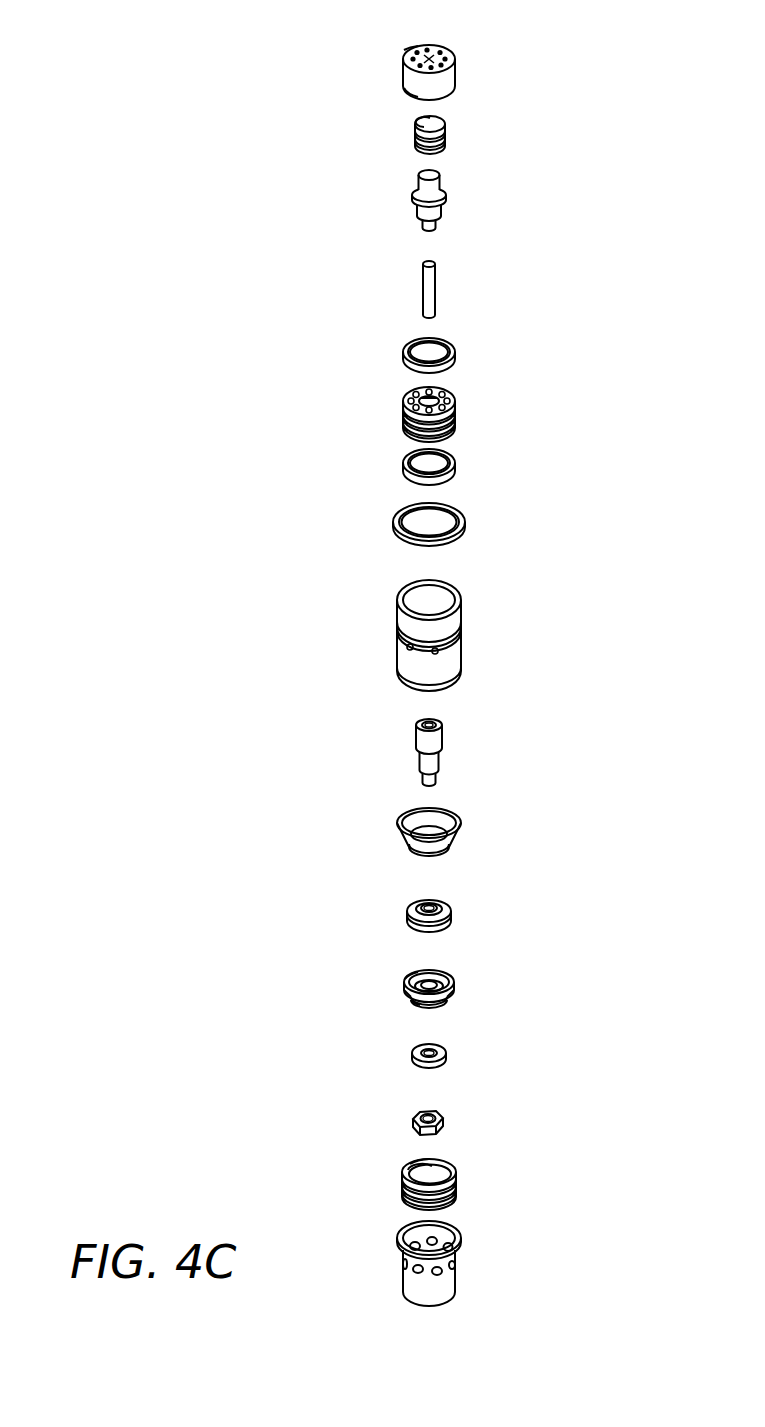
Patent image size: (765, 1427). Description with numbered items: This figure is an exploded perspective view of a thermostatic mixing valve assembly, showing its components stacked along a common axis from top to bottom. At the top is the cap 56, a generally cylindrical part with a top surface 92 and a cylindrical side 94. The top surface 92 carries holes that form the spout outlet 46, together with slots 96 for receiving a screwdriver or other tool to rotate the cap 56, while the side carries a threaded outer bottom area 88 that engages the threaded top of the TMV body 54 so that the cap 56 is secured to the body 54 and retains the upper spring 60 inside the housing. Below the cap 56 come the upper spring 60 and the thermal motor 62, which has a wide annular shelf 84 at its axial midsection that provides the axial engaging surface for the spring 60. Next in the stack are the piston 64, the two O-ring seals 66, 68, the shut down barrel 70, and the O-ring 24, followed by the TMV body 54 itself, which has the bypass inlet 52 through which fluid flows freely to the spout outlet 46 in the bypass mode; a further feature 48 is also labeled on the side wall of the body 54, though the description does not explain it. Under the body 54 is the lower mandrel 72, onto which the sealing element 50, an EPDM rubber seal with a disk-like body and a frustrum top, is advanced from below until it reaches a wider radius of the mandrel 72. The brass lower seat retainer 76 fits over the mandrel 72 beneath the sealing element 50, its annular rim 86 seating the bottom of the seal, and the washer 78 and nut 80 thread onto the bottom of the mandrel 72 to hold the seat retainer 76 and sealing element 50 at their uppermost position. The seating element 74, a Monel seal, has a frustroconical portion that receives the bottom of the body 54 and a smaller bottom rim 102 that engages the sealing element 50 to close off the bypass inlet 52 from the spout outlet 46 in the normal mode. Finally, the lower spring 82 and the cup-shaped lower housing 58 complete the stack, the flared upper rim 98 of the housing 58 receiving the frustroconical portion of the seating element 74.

The O-ring 24 is at (465, 528).
The spout outlet 46 is at (452, 57).
The housing 48 is at (407, 647).
The sealing element 50 is at (452, 913).
The bypass inlet 52 is at (403, 1265).
The TMV body 54 is at (450, 657).
The cap 56 is at (454, 78).
The lower housing 58 is at (457, 1287).
The upper spring 60 is at (443, 137).
The thermal motor 62 is at (438, 215).
The piston 64 is at (437, 278).
The O-ring seal 66 is at (455, 358).
The O-ring seal 68 is at (455, 467).
The shut down barrel 70 is at (453, 413).
The lower mandrel 72 is at (442, 755).
The seating element 74 is at (462, 828).
The lower seat retainer 76 is at (453, 983).
The washer 78 is at (447, 1055).
The nut 80 is at (443, 1120).
The lower spring 82 is at (457, 1185).
The annular shelf 84 is at (412, 197).
The annular rim 86 is at (405, 978).
The threaded outer bottom area 88 is at (408, 93).
The top surface 92 is at (412, 50).
The cylindrical side 94 is at (402, 80).
The slots 96 is at (427, 52).
The flared upper rim 98 is at (460, 1242).
The bottom rim 102 is at (418, 1003).